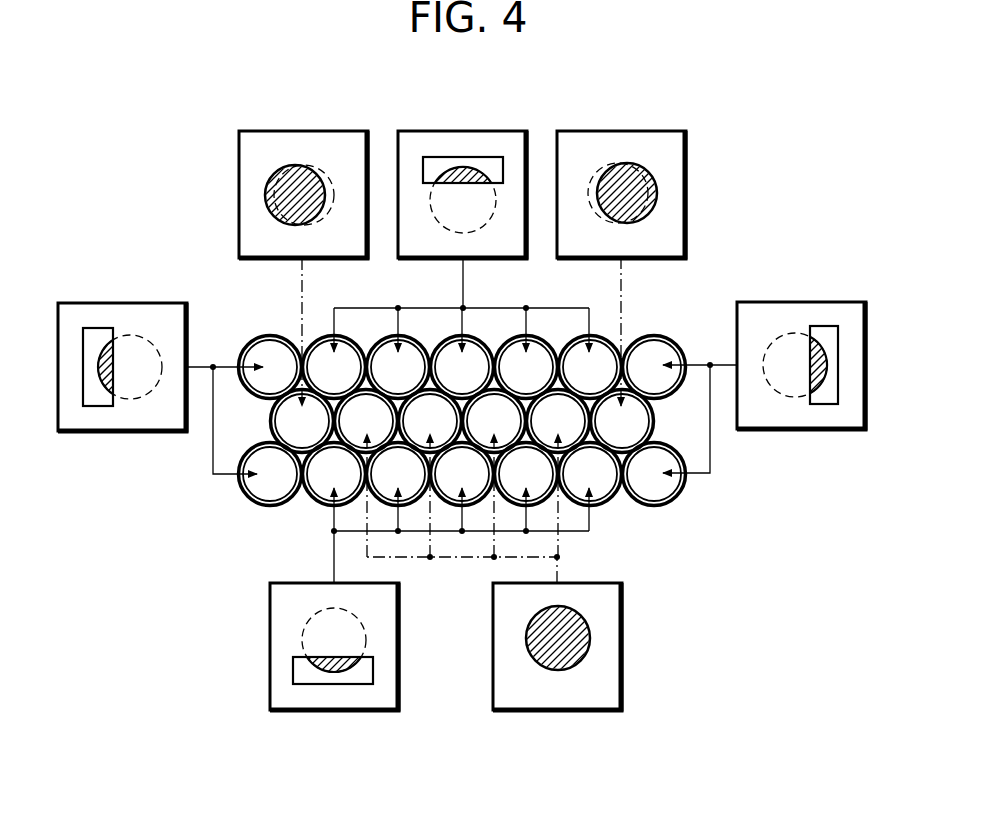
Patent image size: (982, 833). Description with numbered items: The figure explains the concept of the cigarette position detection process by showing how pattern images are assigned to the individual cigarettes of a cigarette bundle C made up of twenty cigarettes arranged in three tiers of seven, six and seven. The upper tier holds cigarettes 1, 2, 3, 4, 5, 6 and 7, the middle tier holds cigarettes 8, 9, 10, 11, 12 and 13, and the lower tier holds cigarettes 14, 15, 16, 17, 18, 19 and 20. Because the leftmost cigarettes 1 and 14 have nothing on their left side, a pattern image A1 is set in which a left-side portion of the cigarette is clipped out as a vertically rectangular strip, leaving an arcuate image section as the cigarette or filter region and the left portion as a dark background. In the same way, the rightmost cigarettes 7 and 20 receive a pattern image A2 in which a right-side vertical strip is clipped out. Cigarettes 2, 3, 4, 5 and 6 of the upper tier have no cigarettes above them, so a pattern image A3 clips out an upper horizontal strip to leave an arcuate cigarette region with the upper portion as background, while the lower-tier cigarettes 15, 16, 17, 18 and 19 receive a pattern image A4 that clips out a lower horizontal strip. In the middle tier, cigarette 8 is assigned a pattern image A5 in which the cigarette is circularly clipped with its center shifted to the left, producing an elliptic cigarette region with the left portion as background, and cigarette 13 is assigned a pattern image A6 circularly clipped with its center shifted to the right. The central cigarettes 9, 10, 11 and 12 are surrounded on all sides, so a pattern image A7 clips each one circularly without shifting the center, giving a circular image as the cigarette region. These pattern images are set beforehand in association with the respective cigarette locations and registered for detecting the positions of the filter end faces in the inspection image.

The pattern image A1 is at (98, 335).
The pattern image A2 is at (827, 333).
The pattern image A3 is at (482, 163).
The pattern image A4 is at (315, 675).
The pattern image A5 is at (296, 178).
The pattern image A6 is at (630, 175).
The pattern image A7 is at (562, 652).
The cigarette bundle C is at (238, 512).
The cigarette 1 is at (270, 367).
The cigarette 2 is at (334, 367).
The cigarette 3 is at (398, 367).
The cigarette 4 is at (462, 367).
The cigarette 5 is at (526, 367).
The cigarette 6 is at (590, 367).
The cigarette 7 is at (654, 367).
The cigarette 8 is at (302, 421).
The cigarette 9 is at (366, 421).
The cigarette 10 is at (430, 421).
The cigarette 11 is at (494, 421).
The cigarette 12 is at (558, 421).
The cigarette 13 is at (622, 421).
The cigarette 14 is at (270, 474).
The cigarette 15 is at (334, 474).
The cigarette 16 is at (398, 474).
The cigarette 17 is at (462, 474).
The cigarette 18 is at (526, 474).
The cigarette 19 is at (590, 474).
The cigarette 20 is at (654, 474).